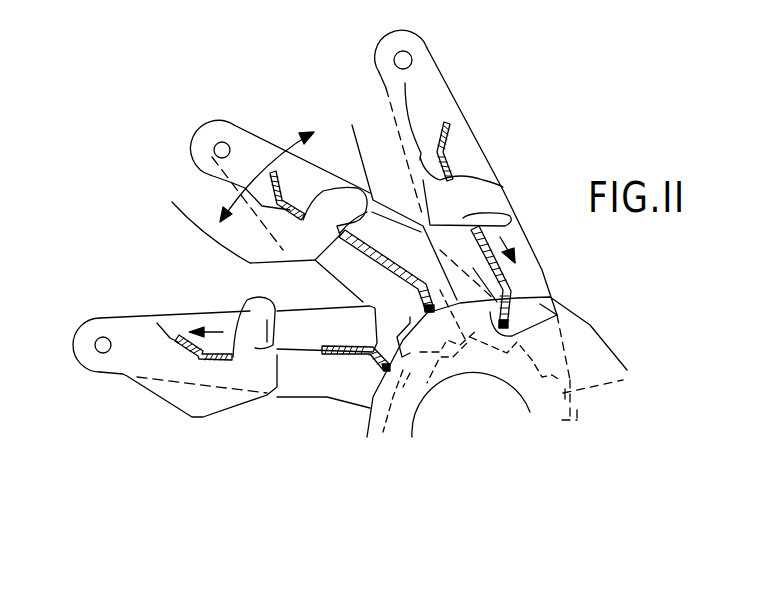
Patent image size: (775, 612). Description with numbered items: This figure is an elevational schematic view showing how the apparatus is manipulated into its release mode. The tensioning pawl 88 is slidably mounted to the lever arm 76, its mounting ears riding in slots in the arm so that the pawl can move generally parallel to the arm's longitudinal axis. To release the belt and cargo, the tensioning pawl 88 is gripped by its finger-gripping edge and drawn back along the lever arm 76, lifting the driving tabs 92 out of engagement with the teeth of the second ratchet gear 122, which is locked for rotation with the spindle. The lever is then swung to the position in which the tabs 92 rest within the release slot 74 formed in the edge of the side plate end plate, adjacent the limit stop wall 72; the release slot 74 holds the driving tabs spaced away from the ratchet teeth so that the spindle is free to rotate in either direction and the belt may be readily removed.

The lever arm 76 is at (263, 140).
The tensioning pawl 88 is at (300, 212).
The driving tabs 92 is at (428, 301).
The release slot 74 is at (560, 314).
The limit stop wall 72 is at (603, 352).
The second ratchet gear 122 is at (622, 378).